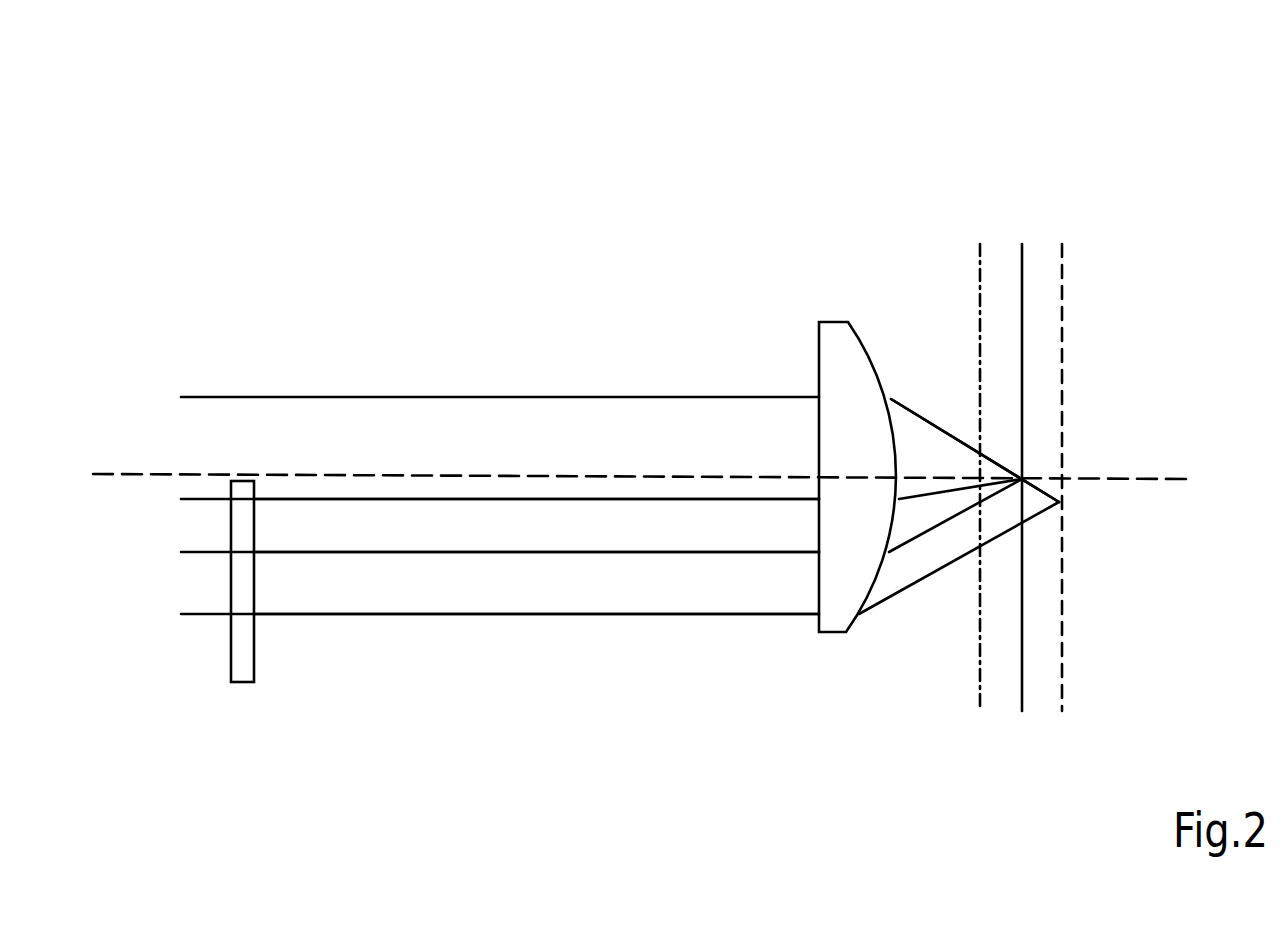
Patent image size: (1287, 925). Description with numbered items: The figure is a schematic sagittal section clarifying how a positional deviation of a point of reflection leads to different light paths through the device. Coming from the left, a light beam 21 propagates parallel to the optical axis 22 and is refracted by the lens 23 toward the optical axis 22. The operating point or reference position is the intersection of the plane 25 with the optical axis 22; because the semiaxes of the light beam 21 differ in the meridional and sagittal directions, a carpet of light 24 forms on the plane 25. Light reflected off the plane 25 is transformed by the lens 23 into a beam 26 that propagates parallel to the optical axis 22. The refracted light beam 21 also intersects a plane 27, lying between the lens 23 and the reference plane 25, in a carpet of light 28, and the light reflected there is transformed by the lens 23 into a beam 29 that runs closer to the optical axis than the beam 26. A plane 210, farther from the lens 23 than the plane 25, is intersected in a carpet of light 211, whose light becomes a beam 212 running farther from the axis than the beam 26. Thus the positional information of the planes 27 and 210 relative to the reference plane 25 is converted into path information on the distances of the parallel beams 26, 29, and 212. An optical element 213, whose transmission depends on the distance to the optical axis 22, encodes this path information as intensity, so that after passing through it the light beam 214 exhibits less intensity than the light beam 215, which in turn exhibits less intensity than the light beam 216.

The light beam 21 is at (340, 398).
The optical axis 22 is at (1113, 477).
The lens 23 is at (830, 320).
The carpet of light 24 is at (1021, 480).
The plane 25 is at (1022, 245).
The beam 26 is at (442, 553).
The plane 27 is at (978, 247).
The carpet of light 28 is at (978, 458).
The beam 29 is at (553, 500).
The plane 210 is at (1062, 252).
The carpet of light 211 is at (1058, 503).
The beam 212 is at (280, 618).
The optical element 213 is at (242, 662).
The light beam 214 is at (195, 500).
The light beam 215 is at (200, 553).
The light beam 216 is at (205, 615).